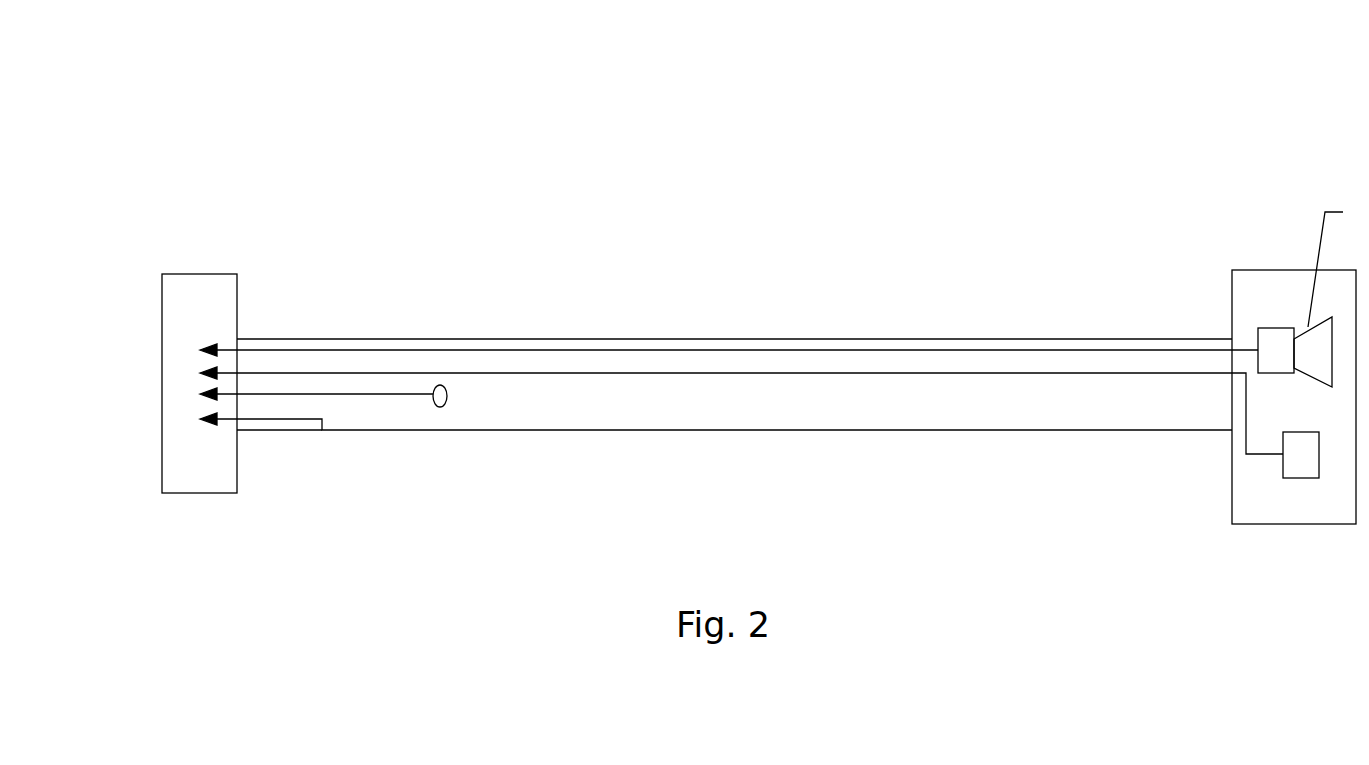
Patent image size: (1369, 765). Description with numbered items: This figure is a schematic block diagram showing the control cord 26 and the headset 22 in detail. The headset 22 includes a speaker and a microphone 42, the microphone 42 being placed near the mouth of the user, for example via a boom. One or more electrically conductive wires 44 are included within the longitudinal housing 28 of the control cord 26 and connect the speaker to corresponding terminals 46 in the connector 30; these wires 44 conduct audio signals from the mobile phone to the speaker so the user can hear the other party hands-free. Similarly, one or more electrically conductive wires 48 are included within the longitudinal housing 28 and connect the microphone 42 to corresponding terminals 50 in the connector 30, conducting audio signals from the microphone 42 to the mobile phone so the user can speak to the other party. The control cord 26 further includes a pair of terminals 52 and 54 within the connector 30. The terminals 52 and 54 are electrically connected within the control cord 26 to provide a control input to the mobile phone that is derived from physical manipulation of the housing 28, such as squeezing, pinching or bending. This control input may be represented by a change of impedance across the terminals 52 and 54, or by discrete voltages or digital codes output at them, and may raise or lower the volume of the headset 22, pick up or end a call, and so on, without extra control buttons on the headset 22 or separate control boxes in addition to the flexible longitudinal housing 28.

The headset 22 is at (1217, 334).
The control cord 26 is at (314, 141).
The longitudinal housing 28 is at (734, 293).
The connector 30 is at (163, 356).
The microphone 42 is at (1233, 522).
The electrically conductive wires 44 is at (737, 303).
The terminals 46 is at (157, 337).
The electrically conductive wires 48 is at (750, 437).
The terminals 50 is at (174, 385).
The terminal 52 is at (262, 406).
The terminal 54 is at (652, 450).